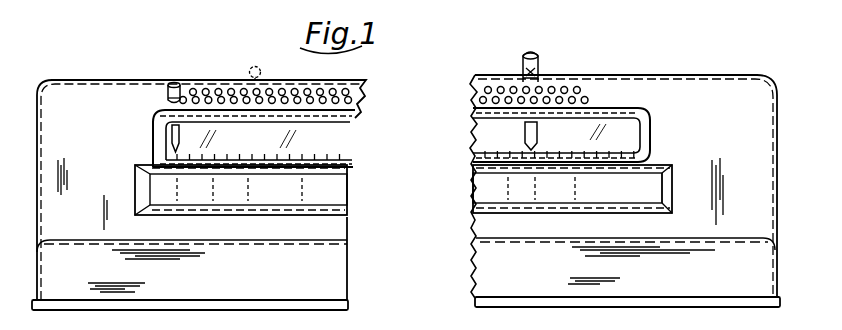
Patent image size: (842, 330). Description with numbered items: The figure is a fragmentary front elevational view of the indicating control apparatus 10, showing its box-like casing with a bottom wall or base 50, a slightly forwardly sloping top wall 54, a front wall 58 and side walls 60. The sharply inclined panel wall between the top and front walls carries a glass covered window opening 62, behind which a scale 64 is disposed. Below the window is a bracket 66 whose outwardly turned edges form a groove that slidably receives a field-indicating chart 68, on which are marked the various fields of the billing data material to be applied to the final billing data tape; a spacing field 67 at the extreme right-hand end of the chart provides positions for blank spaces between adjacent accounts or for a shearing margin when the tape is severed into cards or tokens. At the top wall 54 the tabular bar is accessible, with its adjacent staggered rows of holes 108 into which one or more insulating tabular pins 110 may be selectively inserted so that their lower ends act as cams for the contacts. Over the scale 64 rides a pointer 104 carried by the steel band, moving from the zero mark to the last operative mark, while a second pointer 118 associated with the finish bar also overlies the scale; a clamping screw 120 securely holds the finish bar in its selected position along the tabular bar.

The indicating control apparatus 10 is at (331, 328).
The base 50 is at (688, 306).
The top wall 54 is at (92, 164).
The front wall 58 is at (406, 265).
The side walls 60 is at (38, 203).
The window opening 62 is at (476, 142).
The scale 64 is at (334, 150).
The bracket 66 is at (137, 171).
The spacing field 67 is at (657, 197).
The field-indicating chart 68 is at (316, 200).
The pointer 104 is at (179, 142).
The holes 108 is at (219, 89).
The tabular pins 110 is at (168, 88).
The pointer 118 is at (538, 130).
The clamping screw 120 is at (540, 70).